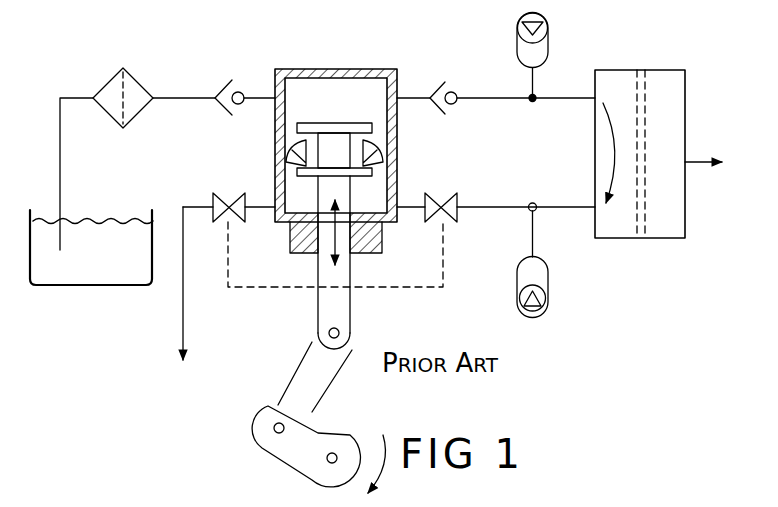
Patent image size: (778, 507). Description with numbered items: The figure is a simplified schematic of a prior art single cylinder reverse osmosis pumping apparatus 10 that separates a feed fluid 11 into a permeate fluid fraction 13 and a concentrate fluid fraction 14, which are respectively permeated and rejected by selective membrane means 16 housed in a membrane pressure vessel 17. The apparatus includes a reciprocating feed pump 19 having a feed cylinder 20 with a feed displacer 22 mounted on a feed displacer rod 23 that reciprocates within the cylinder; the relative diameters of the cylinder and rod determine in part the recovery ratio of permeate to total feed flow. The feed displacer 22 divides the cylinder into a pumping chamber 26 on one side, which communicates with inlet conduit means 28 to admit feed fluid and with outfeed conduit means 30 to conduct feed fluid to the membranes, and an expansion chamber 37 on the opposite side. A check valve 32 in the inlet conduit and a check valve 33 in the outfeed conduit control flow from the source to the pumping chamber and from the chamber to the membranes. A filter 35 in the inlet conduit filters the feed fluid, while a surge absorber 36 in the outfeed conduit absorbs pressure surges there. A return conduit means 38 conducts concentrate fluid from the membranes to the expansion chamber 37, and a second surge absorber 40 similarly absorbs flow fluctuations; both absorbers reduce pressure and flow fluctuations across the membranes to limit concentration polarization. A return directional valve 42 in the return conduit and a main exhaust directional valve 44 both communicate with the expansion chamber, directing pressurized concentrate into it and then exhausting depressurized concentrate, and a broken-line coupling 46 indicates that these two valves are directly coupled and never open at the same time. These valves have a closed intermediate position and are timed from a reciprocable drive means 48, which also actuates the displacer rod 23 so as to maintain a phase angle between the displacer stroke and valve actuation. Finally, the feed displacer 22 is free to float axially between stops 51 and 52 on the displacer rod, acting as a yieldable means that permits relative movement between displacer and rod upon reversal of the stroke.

The pumping apparatus 10 is at (325, 44).
The feed fluid 11 is at (122, 268).
The permeate fluid fraction 13 is at (690, 166).
The concentrate fluid fraction 14 is at (186, 338).
The selective membrane means 16 is at (648, 97).
The membrane pressure vessel 17 is at (656, 240).
The reciprocating feed pump 19 is at (391, 64).
The feed cylinder 20 is at (398, 137).
The feed displacer 22 is at (288, 146).
The feed displacer rod 23 is at (342, 306).
The pumping chamber 26 is at (316, 92).
The inlet conduit means 28 is at (176, 96).
The outfeed conduit means 30 is at (490, 100).
The check valve 32 is at (214, 96).
The check valve 33 is at (453, 88).
The filter 35 is at (107, 82).
The surge absorber 36 is at (549, 32).
The expansion chamber 37 is at (392, 195).
The return conduit means 38 is at (480, 209).
The surge absorber 40 is at (522, 310).
The return directional valve 42 is at (446, 225).
The main exhaust directional valve 44 is at (213, 209).
The coupling 46 is at (250, 289).
The reciprocable drive means 48 is at (352, 424).
The stop 51 is at (328, 126).
The stop 52 is at (292, 217).